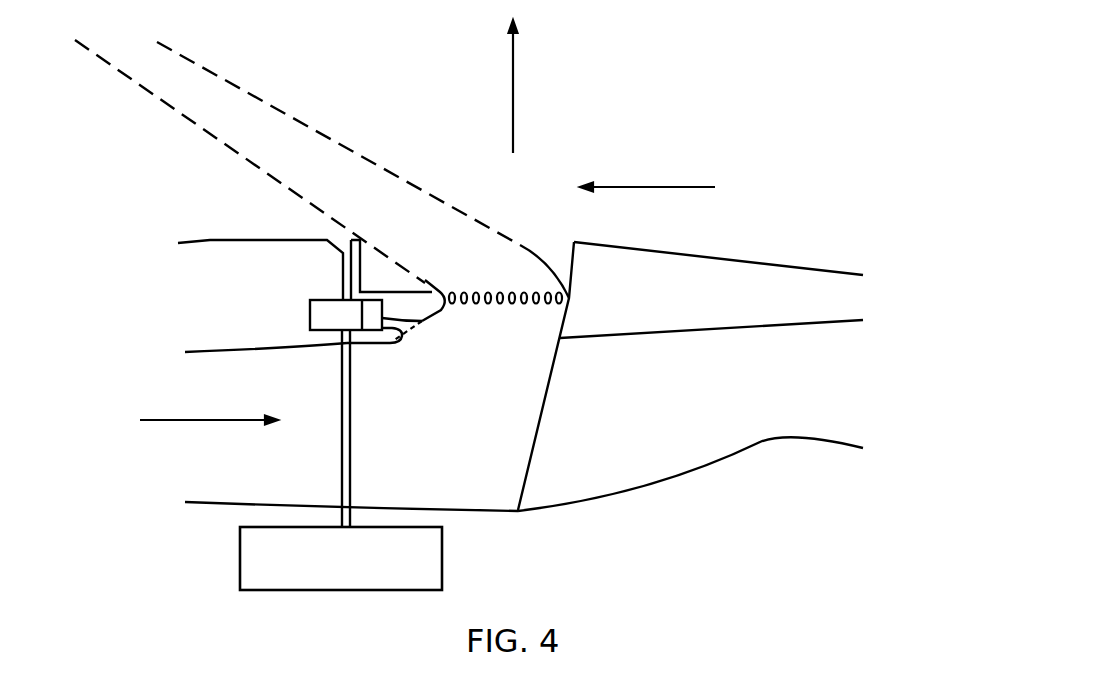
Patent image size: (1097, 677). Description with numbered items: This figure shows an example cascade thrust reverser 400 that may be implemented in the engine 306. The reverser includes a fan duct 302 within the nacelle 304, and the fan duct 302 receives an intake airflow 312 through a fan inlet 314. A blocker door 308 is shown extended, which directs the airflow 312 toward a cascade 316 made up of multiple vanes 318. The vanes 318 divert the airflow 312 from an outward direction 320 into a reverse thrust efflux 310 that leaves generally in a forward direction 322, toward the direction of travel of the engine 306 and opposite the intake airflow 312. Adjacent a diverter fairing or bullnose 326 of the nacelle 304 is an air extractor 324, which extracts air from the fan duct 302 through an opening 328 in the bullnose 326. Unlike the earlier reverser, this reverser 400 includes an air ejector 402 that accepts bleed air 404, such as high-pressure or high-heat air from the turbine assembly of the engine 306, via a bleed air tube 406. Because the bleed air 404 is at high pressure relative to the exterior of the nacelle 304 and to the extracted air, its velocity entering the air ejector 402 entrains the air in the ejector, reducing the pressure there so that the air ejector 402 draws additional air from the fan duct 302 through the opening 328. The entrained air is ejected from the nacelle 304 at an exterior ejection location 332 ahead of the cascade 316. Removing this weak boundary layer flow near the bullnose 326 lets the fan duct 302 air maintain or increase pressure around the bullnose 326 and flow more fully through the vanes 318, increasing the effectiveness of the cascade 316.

The cascade thrust reverser 400 is at (124, 188).
The fan duct 302 is at (516, 447).
The nacelle 304 is at (235, 257).
The engine 306 is at (734, 75).
The blocker door 308 is at (690, 376).
The reverse thrust efflux 310 is at (297, 161).
The intake airflow 312 is at (178, 410).
The fan inlet 314 is at (179, 396).
The cascade 316 is at (486, 270).
The vanes 318 is at (505, 316).
The outward direction 320 is at (551, 86).
The forward direction 322 is at (678, 175).
The air extractor 324 is at (343, 356).
The bullnose 326 is at (445, 341).
The opening 328 is at (410, 354).
The ejection location 332 is at (330, 231).
The air ejector 402 is at (306, 301).
The bleed air 404 is at (381, 558).
The bleed air tube 406 is at (386, 428).